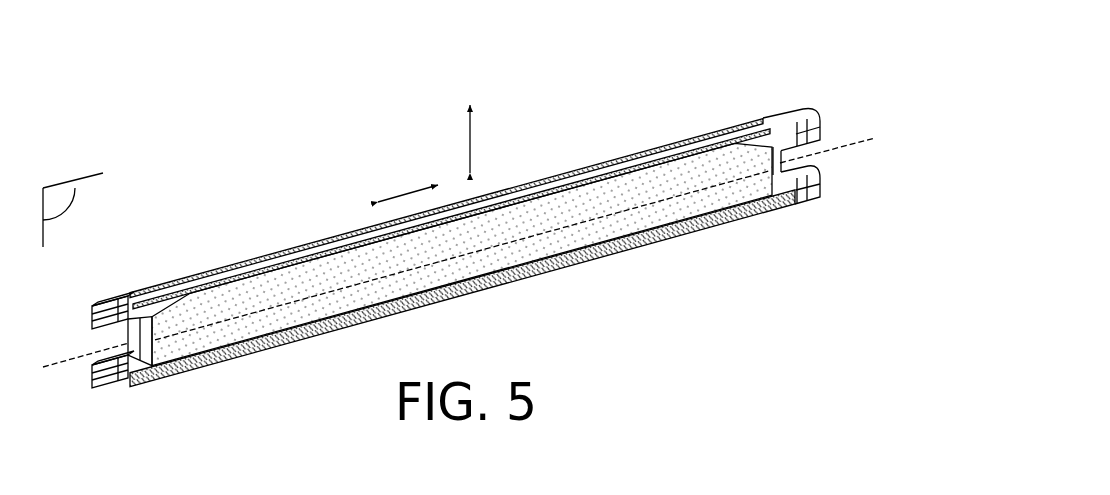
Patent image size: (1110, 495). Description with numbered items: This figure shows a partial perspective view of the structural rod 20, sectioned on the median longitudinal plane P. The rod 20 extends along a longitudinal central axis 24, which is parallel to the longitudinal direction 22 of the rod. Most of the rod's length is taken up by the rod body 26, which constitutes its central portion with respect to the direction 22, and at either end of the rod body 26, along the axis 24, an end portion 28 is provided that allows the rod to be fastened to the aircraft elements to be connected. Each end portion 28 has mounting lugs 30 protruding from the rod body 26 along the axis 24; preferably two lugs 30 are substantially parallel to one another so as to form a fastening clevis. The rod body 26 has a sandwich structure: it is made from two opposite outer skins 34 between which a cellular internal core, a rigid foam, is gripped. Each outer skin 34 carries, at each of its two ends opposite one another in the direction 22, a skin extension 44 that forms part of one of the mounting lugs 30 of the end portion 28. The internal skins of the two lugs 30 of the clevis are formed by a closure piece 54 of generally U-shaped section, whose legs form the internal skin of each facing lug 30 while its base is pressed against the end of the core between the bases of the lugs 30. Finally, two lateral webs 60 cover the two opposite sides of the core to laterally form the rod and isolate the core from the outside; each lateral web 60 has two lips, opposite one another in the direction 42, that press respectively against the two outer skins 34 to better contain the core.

The median longitudinal plane P is at (58, 190).
The structural rod 20 is at (617, 78).
The longitudinal direction 22 is at (408, 192).
The longitudinal central axis 24 is at (50, 368).
The rod body 26 is at (522, 158).
The end portion 28 is at (123, 277).
The mounting lug 30 is at (143, 392).
The outer skin 34 is at (298, 243).
The direction 42 is at (474, 138).
The skin extension 44 is at (105, 302).
The closure piece 54 is at (105, 362).
The lateral web 60 is at (365, 225).